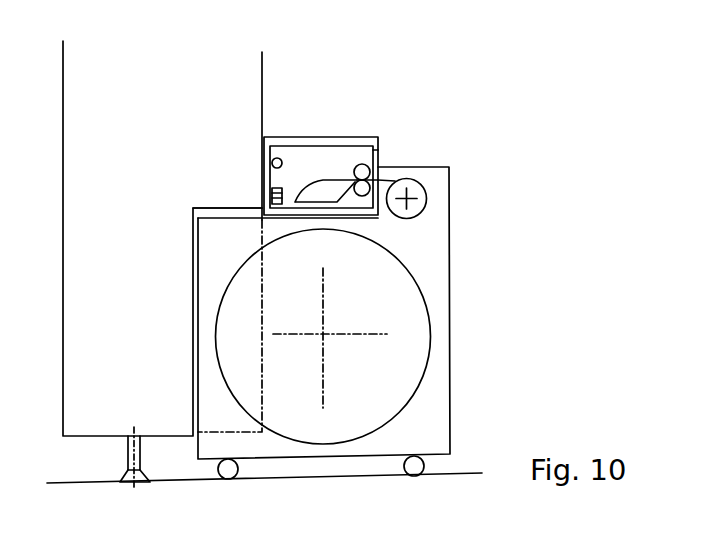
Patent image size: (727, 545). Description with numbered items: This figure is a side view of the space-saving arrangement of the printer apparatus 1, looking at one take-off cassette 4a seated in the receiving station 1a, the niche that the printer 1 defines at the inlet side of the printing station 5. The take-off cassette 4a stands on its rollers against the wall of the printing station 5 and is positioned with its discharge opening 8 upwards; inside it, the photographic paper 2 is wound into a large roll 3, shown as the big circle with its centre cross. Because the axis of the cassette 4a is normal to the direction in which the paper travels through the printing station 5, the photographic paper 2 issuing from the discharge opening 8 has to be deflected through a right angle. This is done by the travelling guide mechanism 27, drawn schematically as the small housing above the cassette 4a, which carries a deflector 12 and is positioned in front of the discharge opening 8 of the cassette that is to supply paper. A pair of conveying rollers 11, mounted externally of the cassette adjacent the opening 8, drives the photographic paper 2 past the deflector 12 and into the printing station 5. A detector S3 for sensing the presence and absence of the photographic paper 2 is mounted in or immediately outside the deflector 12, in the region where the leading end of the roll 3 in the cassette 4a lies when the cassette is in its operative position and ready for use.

The apparatus 1 is at (248, 87).
The receiving station 1a is at (240, 214).
The photographic paper 2 is at (392, 218).
The roll 3 is at (428, 303).
The take-off cassette 4a is at (438, 262).
The printing station 5 is at (213, 204).
The discharge opening 8 is at (378, 156).
The conveying rollers 11 is at (361, 164).
The deflector 12 is at (333, 190).
The travelling guide mechanism 27 is at (308, 146).
The detector S3 is at (264, 194).